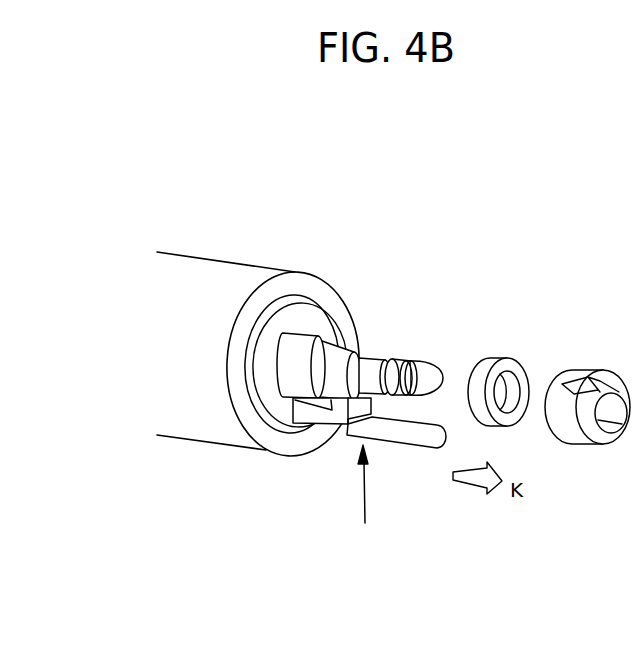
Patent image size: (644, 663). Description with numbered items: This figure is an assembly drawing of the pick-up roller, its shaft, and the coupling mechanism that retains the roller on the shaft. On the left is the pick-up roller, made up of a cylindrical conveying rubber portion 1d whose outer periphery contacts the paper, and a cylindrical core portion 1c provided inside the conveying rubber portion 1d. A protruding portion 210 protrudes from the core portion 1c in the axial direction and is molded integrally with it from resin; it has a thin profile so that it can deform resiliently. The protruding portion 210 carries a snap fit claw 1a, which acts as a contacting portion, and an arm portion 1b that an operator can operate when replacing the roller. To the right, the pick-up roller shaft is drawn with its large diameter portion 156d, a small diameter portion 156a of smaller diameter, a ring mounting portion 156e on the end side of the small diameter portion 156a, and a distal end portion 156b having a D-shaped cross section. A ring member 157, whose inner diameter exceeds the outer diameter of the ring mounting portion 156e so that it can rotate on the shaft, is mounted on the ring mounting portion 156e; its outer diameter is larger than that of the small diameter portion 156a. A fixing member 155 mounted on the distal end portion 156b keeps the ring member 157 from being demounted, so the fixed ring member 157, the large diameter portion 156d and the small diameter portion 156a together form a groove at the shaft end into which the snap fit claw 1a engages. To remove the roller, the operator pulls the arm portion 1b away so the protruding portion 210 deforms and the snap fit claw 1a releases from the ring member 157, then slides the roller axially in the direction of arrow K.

The snap fit claw 1a is at (335, 432).
The arm portion 1b is at (403, 435).
The core portion 1c is at (275, 413).
The conveying rubber portion 1d is at (198, 278).
The small diameter portion 156a is at (332, 363).
The distal end portion 156b is at (428, 375).
The large diameter portion 156d is at (302, 352).
The ring mounting portion 156e is at (377, 357).
The ring member 157 is at (488, 359).
The fixing member 155 is at (583, 378).
The protruding portion 210 is at (368, 502).